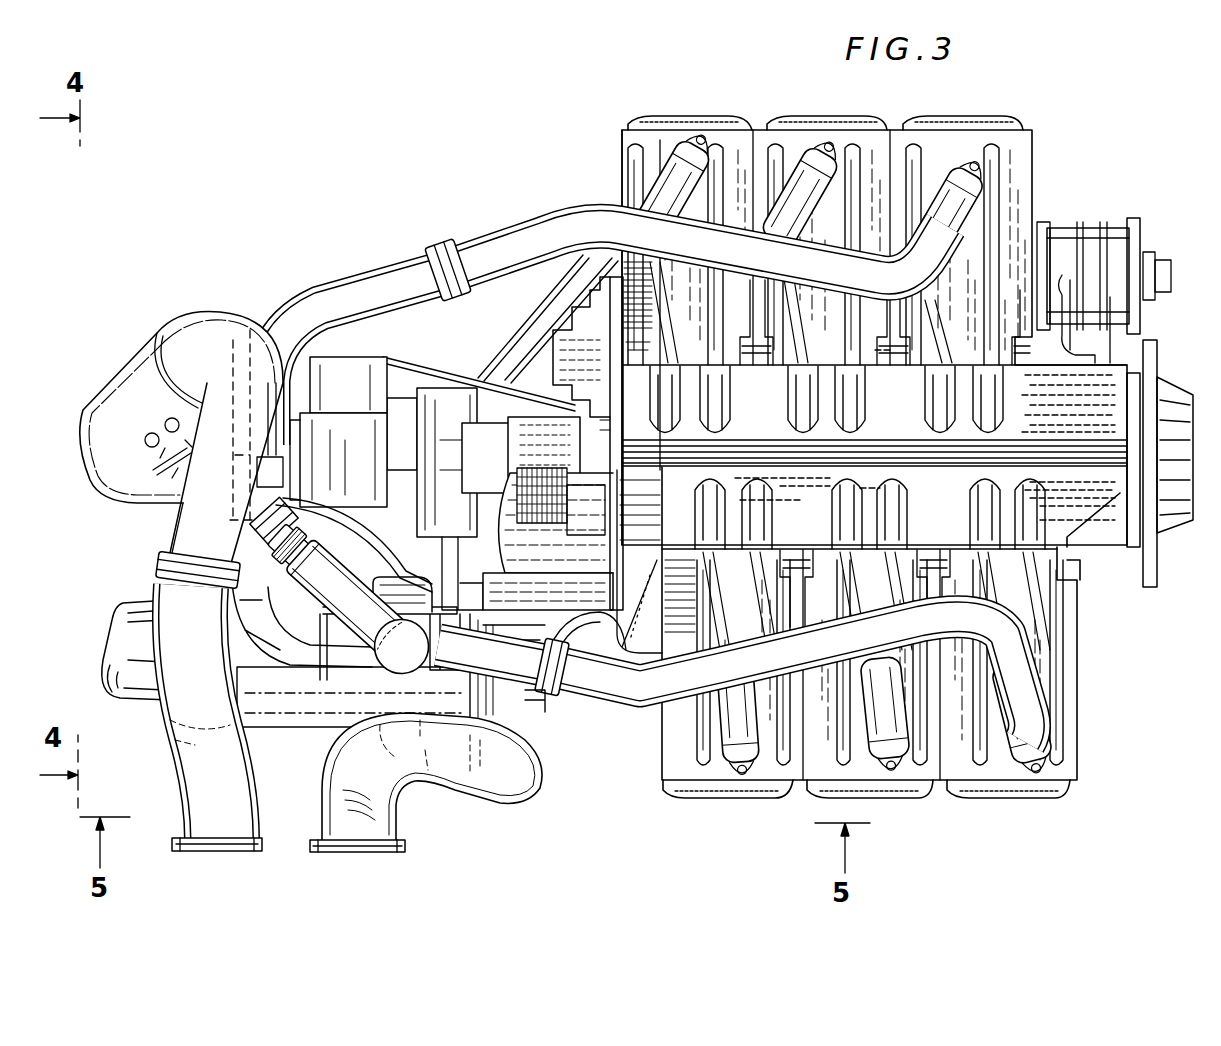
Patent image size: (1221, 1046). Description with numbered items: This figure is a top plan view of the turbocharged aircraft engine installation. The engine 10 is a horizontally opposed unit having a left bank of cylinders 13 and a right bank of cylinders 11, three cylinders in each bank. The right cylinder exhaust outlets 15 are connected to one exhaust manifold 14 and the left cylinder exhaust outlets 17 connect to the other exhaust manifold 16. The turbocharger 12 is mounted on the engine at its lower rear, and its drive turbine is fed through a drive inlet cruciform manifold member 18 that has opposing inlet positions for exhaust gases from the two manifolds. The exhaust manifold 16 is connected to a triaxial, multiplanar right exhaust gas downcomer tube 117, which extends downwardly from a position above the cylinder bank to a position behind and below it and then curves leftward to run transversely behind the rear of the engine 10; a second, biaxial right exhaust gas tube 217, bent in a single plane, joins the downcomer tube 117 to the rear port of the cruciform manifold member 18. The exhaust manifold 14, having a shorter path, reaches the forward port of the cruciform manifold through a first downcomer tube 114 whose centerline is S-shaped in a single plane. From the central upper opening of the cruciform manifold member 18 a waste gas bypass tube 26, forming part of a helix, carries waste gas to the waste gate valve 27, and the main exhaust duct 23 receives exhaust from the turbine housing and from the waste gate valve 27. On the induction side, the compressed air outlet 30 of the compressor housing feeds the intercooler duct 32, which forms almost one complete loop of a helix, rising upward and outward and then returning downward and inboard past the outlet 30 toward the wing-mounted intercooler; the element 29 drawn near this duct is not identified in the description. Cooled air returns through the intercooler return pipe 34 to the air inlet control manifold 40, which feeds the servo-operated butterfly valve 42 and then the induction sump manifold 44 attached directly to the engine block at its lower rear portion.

The engine 10 is at (1092, 609).
The right bank of cylinders 11 is at (782, 798).
The turbocharger 12 is at (420, 565).
The left bank of cylinders 13 is at (872, 120).
The exhaust manifold 14 is at (628, 712).
The right cylinder exhaust outlets 15 is at (862, 746).
The exhaust manifold 16 is at (538, 222).
The left cylinder exhaust outlets 17 is at (790, 224).
The drive inlet cruciform manifold member 18 is at (458, 690).
The main exhaust duct 23 is at (143, 702).
The waste gas bypass tube 26 is at (337, 655).
The waste gate valve 27 is at (312, 520).
The pipe connection 29 is at (540, 745).
The compressed air outlet 30 is at (537, 793).
The intercooler duct 32 is at (425, 787).
The intercooler return pipe 34 is at (252, 808).
The air inlet control manifold 40 is at (88, 412).
The servo-operated butterfly valve 42 is at (352, 507).
The induction sump manifold 44 is at (505, 352).
The first downcomer tube 114 is at (548, 692).
The right exhaust gas downcomer tube 117 is at (345, 282).
The second right exhaust gas tube 217 is at (252, 650).